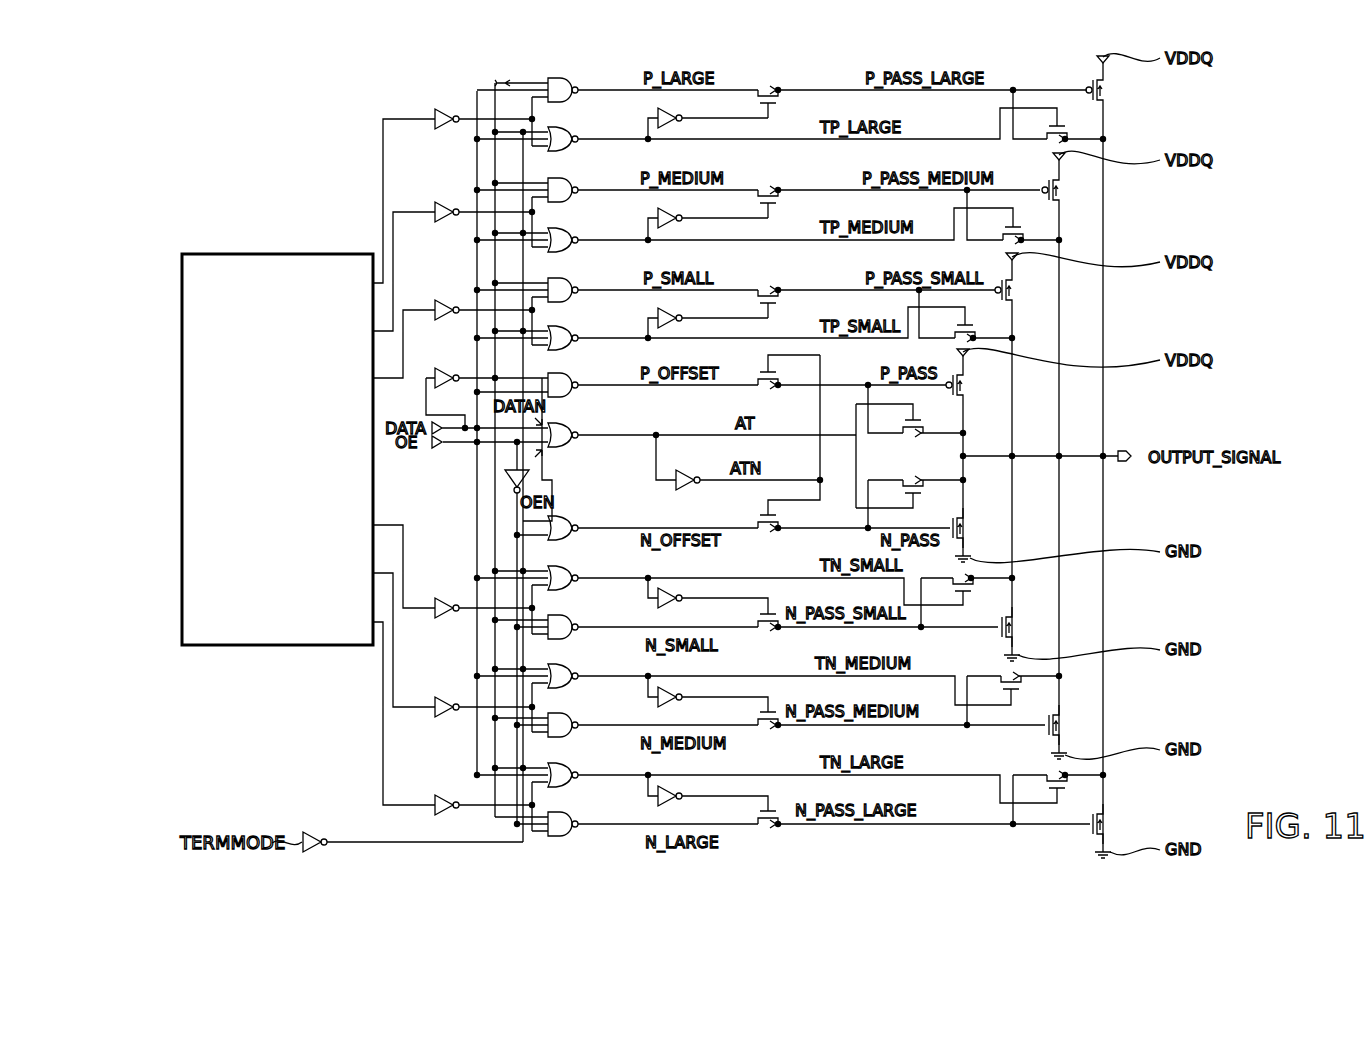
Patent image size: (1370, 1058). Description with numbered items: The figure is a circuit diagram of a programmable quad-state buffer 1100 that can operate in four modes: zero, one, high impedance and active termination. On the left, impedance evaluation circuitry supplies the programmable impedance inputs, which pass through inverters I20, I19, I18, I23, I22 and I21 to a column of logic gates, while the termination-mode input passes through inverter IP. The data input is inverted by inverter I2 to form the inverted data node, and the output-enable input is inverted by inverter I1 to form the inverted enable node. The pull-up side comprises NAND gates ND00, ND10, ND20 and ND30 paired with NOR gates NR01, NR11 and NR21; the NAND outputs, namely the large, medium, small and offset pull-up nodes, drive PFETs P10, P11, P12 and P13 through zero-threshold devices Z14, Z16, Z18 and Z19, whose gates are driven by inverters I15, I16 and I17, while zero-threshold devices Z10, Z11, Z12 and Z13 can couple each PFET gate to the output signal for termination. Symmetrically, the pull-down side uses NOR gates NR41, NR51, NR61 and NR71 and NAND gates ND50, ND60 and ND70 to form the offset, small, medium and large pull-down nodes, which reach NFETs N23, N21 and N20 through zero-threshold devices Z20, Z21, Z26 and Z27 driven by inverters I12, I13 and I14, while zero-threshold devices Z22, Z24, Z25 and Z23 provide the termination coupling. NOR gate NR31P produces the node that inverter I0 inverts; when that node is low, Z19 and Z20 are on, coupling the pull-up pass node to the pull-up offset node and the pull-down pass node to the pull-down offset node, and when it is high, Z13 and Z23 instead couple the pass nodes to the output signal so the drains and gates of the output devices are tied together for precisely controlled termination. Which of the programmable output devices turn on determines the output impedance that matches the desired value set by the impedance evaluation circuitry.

The programmable quad-state buffer 1100 is at (298, 723).
The inverter I20 is at (483, 112).
The inverter I19 is at (483, 205).
The inverter I18 is at (483, 303).
The inverter I2 is at (445, 391).
The inverter I1 is at (522, 467).
The inverter I0 is at (748, 473).
The inverter I15 is at (708, 116).
The inverter I16 is at (708, 217).
The inverter I17 is at (708, 316).
The inverter I12 is at (708, 599).
The inverter I13 is at (708, 698).
The inverter I14 is at (708, 797).
The inverter I23 is at (483, 601).
The inverter I22 is at (483, 700).
The inverter I21 is at (483, 798).
The inverter IP is at (413, 834).
The NAND gate ND00 is at (585, 86).
The NOR gate NR01 is at (584, 135).
The NAND gate ND10 is at (585, 186).
The NOR gate NR11 is at (584, 236).
The NAND gate ND20 is at (585, 286).
The NOR gate NR21 is at (584, 334).
The NAND gate ND30 is at (585, 381).
The NOR gate NR31P is at (589, 431).
The NOR gate NR41 is at (584, 524).
The NOR gate NR51 is at (584, 574).
The NAND gate ND50 is at (585, 623).
The NOR gate NR61 is at (584, 672).
The NAND gate ND60 is at (585, 721).
The NOR gate NR71 is at (584, 771).
The NAND gate ND70 is at (585, 820).
The zero-threshold device Z14 is at (753, 93).
The zero-threshold device Z16 is at (753, 193).
The zero-threshold device Z18 is at (753, 293).
The zero-threshold device Z19 is at (775, 372).
The zero-threshold device Z20 is at (754, 519).
The zero-threshold device Z21 is at (753, 618).
The zero-threshold device Z26 is at (753, 716).
The zero-threshold device Z27 is at (753, 815).
The zero-threshold device Z10 is at (1040, 130).
The zero-threshold device Z11 is at (995, 231).
The zero-threshold device Z12 is at (948, 329).
The zero-threshold device Z13 is at (896, 424).
The zero-threshold device Z23 is at (896, 489).
The zero-threshold device Z22 is at (948, 588).
The zero-threshold device Z24 is at (995, 687).
The zero-threshold device Z25 is at (1041, 785).
The PFET P10 is at (1113, 450).
The PFET P11 is at (1069, 449).
The PFET P12 is at (1022, 450).
The PFET P13 is at (973, 448).
The NFET N23 is at (1002, 584).
The NFET N21 is at (1074, 732).
The NFET N20 is at (1118, 831).